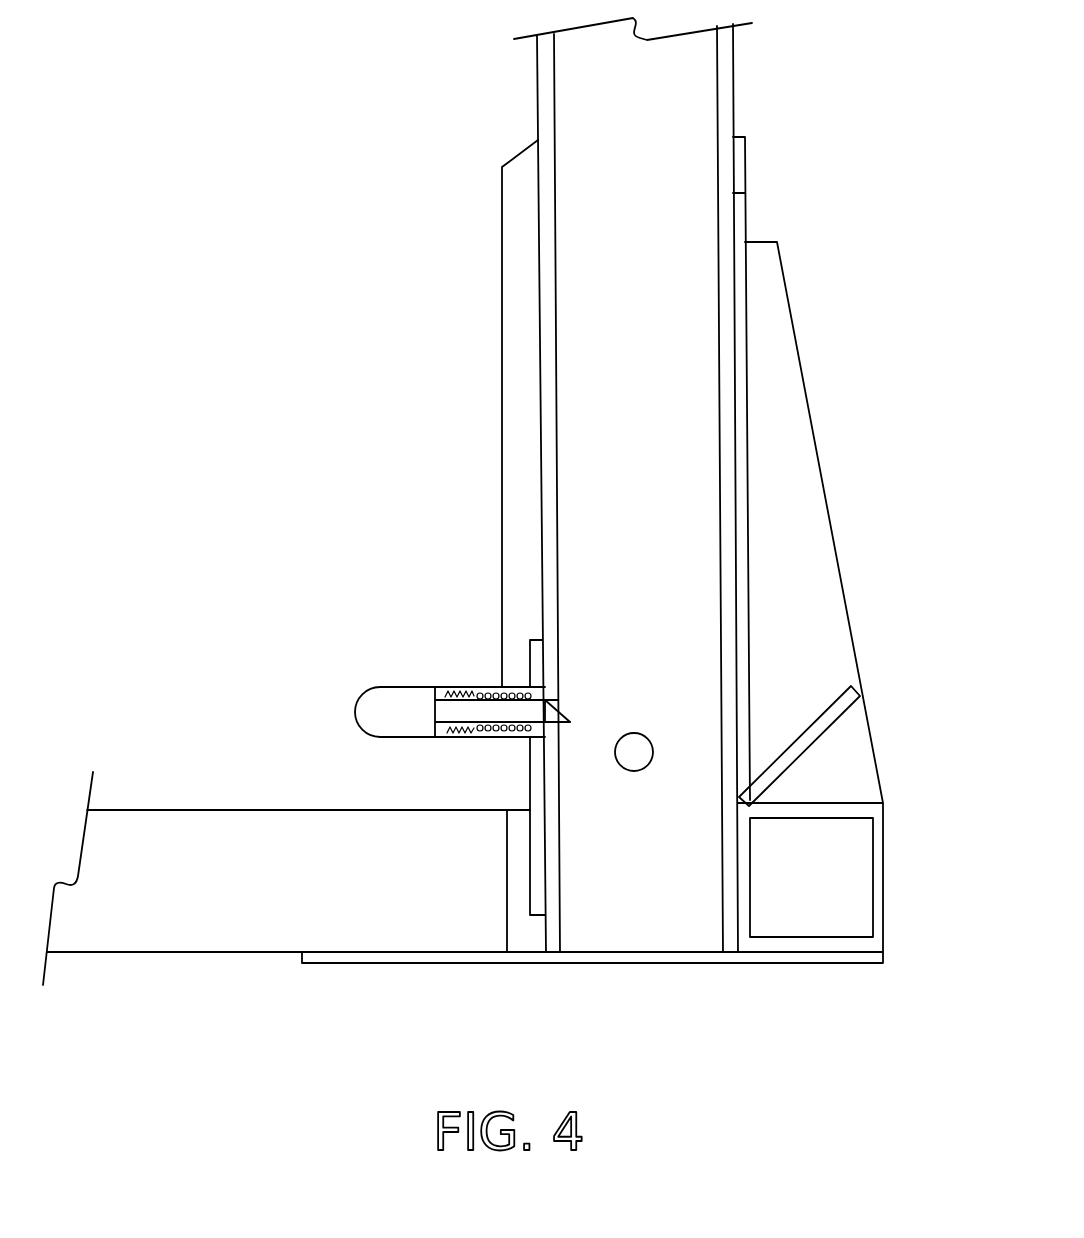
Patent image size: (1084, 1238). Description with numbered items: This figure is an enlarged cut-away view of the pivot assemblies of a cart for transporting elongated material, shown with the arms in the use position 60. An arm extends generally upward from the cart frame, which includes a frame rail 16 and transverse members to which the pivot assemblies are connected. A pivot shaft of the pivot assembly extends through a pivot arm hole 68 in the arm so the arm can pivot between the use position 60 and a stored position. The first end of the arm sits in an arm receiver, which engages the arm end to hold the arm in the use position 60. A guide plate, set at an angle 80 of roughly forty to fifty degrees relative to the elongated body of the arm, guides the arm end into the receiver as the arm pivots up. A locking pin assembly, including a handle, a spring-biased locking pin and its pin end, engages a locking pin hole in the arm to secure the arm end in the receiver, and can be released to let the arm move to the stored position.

The frame rail 16 is at (127, 810).
The use position 60 is at (526, 87).
The pivot arm holes 68 is at (634, 771).
The angle 80 is at (752, 702).